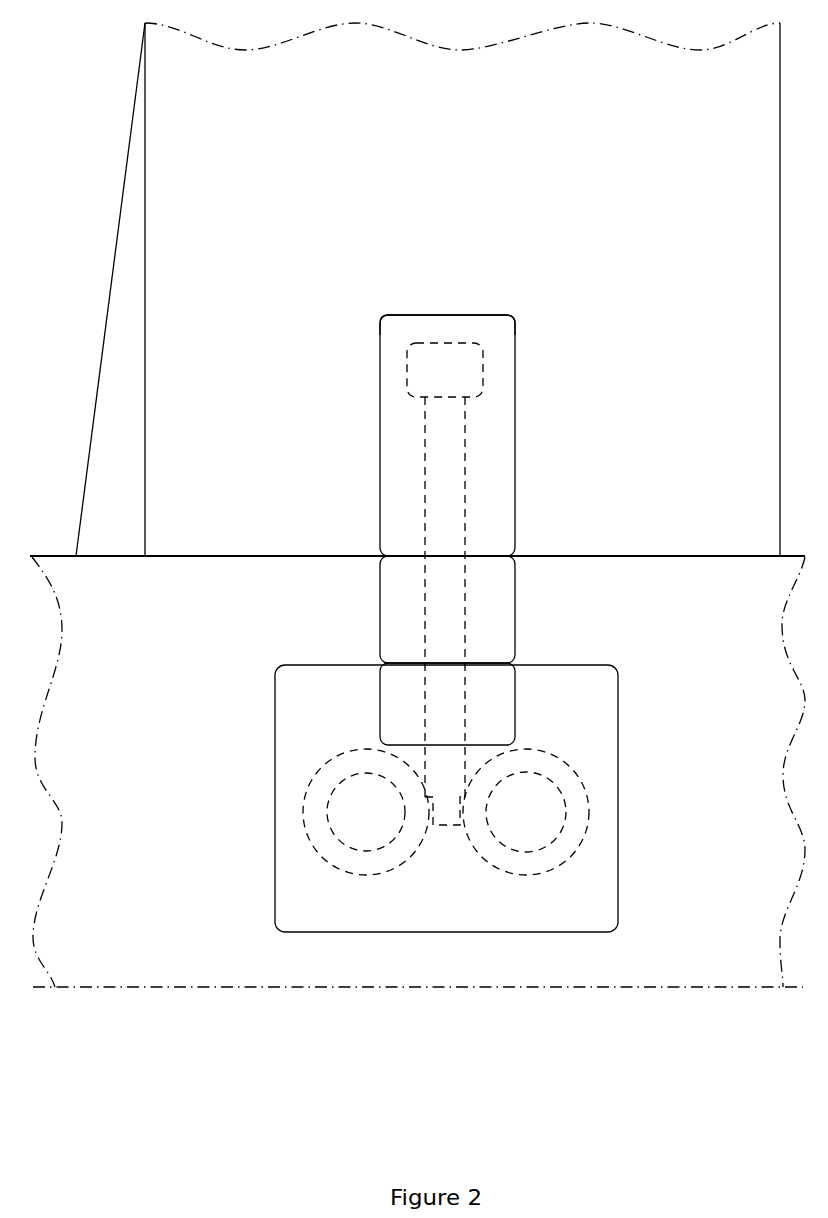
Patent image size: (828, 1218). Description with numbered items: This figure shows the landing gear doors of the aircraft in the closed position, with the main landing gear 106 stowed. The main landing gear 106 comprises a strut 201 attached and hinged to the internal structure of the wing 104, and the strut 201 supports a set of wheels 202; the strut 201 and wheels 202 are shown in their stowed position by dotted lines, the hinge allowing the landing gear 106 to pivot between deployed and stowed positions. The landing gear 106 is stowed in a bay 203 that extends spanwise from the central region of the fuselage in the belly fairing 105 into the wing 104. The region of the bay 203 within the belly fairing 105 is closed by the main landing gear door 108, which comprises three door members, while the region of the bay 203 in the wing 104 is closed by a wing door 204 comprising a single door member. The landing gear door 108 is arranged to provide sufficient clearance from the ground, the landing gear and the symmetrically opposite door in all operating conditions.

The wing 104 is at (250, 182).
The belly fairing 105 is at (670, 692).
The main landing gear 106 is at (465, 583).
The landing gear door 108 is at (408, 705).
The strut 201 is at (443, 342).
The set of wheels 202 is at (333, 828).
The bay 203 is at (380, 457).
The wing door 204 is at (408, 330).